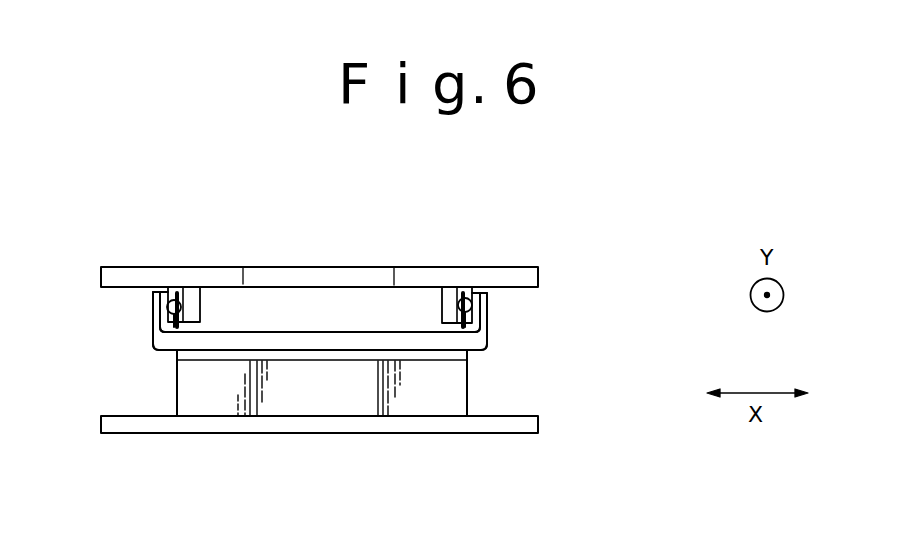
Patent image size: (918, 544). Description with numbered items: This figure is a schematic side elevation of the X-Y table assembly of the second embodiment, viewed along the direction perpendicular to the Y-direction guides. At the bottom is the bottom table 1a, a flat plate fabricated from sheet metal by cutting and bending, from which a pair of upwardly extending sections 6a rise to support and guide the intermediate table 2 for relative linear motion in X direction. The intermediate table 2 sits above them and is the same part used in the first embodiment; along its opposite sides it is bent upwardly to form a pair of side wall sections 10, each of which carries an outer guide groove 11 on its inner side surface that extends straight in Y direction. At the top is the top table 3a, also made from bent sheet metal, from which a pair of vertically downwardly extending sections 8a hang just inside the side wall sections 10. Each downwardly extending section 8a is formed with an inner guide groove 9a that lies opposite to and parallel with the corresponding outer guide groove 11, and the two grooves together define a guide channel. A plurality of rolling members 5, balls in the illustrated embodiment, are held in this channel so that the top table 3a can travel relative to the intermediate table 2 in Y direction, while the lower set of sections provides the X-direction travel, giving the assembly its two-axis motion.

The top table 3a is at (320, 267).
The bottom table 1a is at (423, 418).
The intermediate table 2 is at (442, 340).
The side wall section 10 is at (153, 312).
The vertically downwardly extending section 8a is at (200, 302).
The outer guide groove 11 is at (176, 292).
The rolling member 5 is at (184, 299).
The inner guide groove 9a is at (171, 317).
The upwardly extending section 6a is at (297, 383).